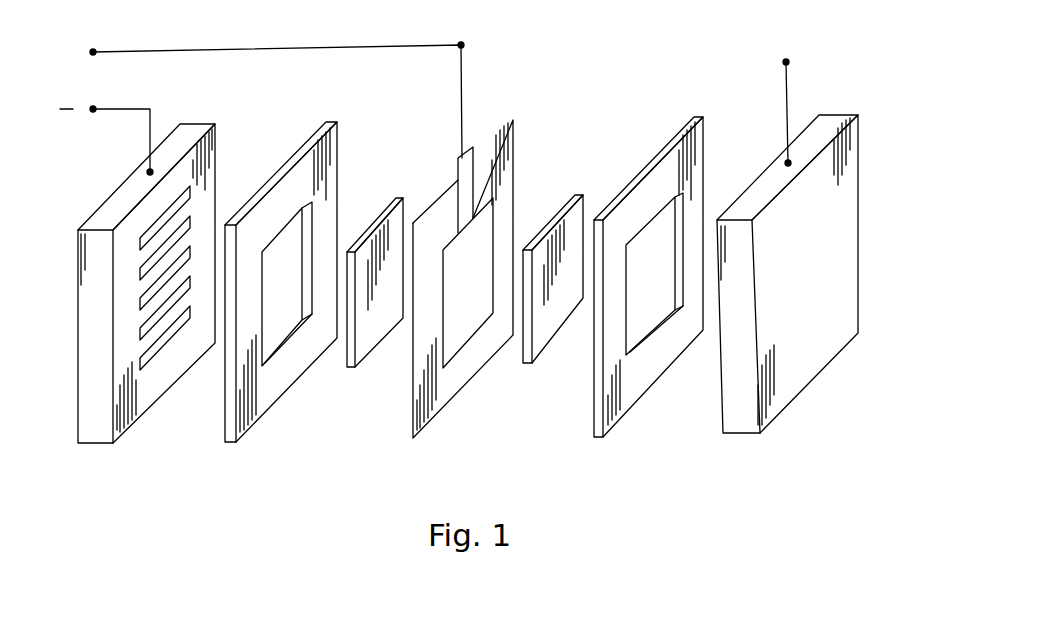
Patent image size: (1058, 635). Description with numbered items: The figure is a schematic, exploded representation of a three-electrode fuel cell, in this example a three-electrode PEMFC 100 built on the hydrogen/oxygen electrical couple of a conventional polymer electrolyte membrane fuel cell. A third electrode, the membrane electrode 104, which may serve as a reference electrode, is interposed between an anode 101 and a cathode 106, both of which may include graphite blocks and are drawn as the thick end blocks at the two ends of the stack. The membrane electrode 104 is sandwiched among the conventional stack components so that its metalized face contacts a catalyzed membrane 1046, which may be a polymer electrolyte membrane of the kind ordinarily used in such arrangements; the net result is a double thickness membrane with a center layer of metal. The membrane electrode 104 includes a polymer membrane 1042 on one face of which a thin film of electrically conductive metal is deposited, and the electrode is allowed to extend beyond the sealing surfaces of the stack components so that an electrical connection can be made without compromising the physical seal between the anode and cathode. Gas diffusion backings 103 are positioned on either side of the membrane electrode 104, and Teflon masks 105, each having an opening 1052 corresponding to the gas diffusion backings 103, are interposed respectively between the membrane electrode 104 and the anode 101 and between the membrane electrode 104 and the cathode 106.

The three-electrode PEMFC 100 is at (628, 80).
The anode 101 is at (93, 440).
The gas diffusion backings 103 is at (365, 345).
The membrane electrode 104 is at (443, 433).
The Teflon masks 105 is at (270, 388).
The cathode 106 is at (748, 425).
The polymer membrane 1042 is at (515, 217).
The catalyzed membrane 1046 is at (465, 365).
The opening 1052 is at (295, 243).